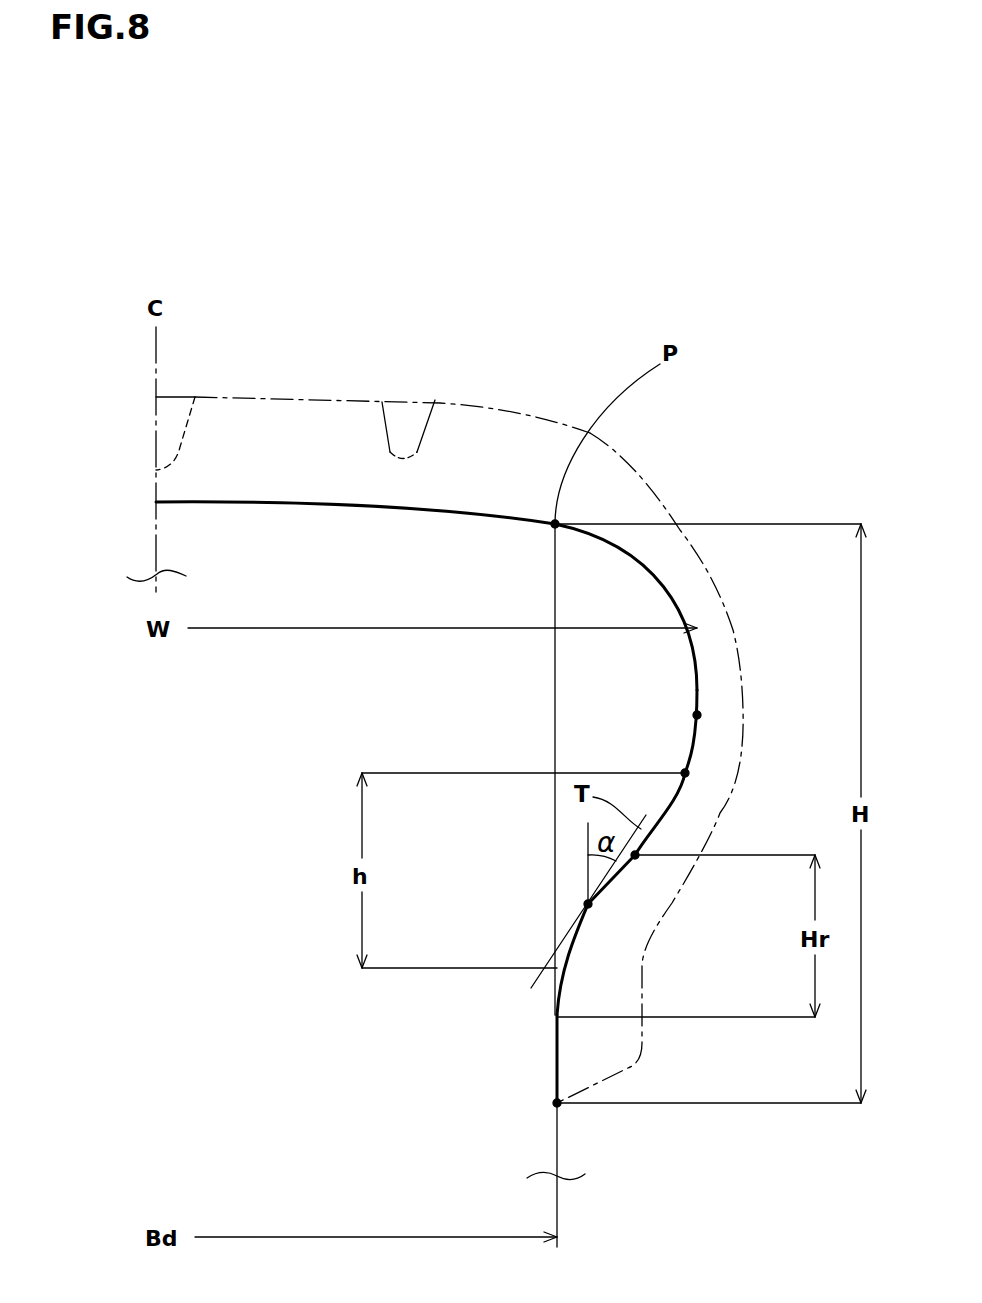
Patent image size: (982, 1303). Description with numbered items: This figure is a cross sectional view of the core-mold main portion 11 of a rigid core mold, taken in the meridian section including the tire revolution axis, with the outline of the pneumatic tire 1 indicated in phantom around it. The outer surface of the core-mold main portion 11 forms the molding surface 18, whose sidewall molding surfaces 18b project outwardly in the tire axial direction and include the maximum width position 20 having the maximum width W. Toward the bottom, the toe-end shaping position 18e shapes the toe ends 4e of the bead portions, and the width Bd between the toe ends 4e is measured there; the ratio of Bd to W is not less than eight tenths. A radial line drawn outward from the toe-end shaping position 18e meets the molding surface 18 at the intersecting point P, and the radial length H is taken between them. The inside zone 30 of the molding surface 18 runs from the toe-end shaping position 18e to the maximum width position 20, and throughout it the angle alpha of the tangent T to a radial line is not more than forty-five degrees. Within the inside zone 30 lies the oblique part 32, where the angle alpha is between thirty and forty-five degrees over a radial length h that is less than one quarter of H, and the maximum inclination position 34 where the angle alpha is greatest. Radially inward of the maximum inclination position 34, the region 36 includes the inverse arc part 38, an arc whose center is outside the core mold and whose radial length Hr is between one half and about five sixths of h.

The pneumatic tire 1 is at (667, 453).
The core-mold main portion 11 is at (490, 503).
The molding surface 18 is at (285, 502).
The sidewall molding surfaces 18b is at (697, 744).
The maximum width position 20 is at (697, 715).
The inside zone 30 is at (582, 921).
The oblique part 32 is at (658, 837).
The maximum inclination position 34 is at (622, 870).
The region 36 is at (567, 955).
The inverse arc part 38 is at (563, 974).
The toe ends 4e is at (649, 1131).
The toe-end shaping position 18e is at (557, 1103).